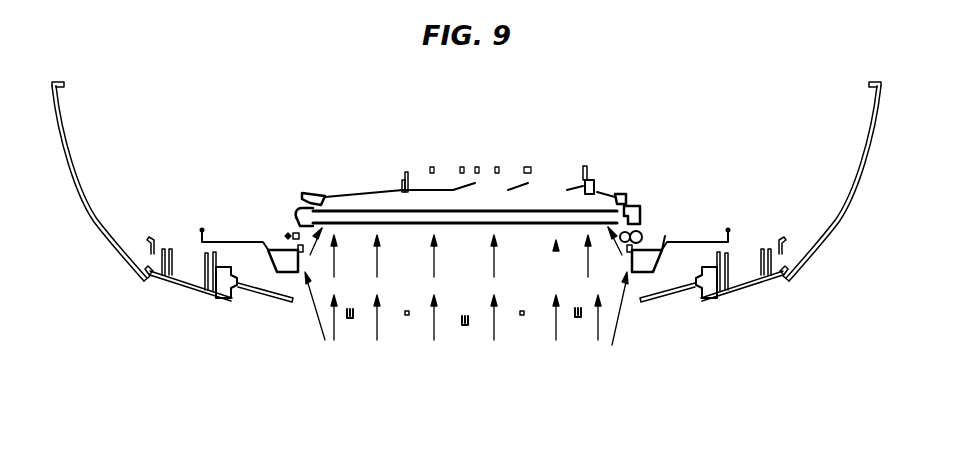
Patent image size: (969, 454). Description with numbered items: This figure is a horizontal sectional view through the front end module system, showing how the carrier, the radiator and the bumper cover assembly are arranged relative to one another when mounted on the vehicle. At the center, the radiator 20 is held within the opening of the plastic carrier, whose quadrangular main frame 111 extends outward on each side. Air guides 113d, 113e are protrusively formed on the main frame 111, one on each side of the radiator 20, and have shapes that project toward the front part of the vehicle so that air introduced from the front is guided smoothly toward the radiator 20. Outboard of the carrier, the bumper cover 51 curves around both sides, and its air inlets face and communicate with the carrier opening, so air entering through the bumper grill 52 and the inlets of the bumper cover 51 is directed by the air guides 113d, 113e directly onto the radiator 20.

The radiator 20 is at (543, 213).
The main frame 111 is at (699, 240).
The bumper cover 51 is at (180, 284).
The air guide 113d is at (273, 272).
The air guide 113e is at (650, 275).
The bumper grill 52 is at (350, 322).